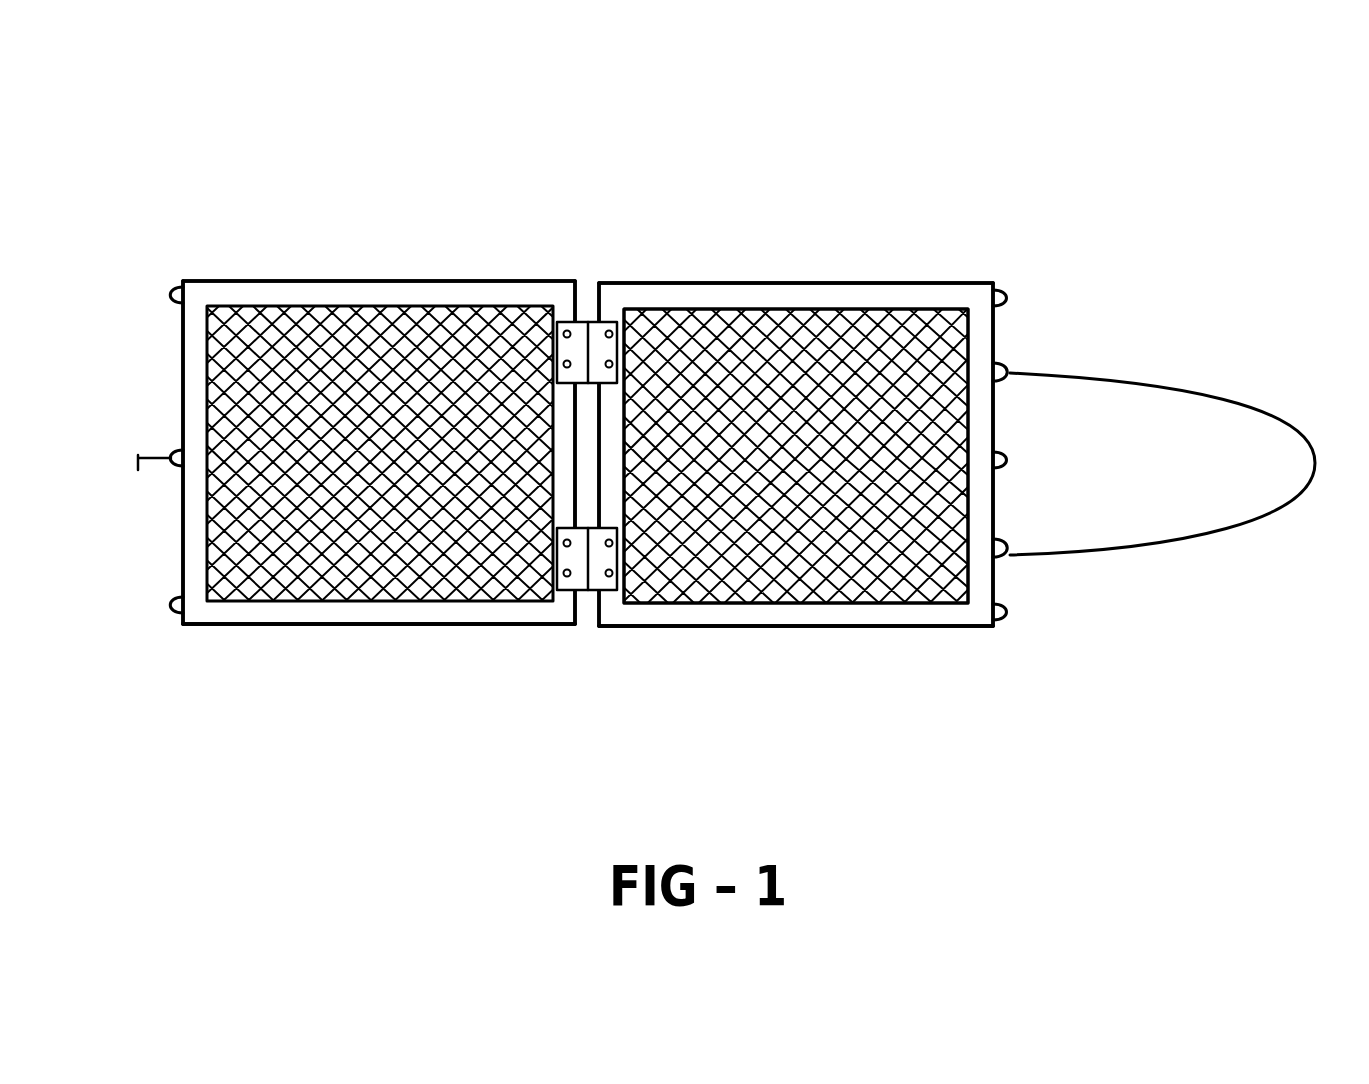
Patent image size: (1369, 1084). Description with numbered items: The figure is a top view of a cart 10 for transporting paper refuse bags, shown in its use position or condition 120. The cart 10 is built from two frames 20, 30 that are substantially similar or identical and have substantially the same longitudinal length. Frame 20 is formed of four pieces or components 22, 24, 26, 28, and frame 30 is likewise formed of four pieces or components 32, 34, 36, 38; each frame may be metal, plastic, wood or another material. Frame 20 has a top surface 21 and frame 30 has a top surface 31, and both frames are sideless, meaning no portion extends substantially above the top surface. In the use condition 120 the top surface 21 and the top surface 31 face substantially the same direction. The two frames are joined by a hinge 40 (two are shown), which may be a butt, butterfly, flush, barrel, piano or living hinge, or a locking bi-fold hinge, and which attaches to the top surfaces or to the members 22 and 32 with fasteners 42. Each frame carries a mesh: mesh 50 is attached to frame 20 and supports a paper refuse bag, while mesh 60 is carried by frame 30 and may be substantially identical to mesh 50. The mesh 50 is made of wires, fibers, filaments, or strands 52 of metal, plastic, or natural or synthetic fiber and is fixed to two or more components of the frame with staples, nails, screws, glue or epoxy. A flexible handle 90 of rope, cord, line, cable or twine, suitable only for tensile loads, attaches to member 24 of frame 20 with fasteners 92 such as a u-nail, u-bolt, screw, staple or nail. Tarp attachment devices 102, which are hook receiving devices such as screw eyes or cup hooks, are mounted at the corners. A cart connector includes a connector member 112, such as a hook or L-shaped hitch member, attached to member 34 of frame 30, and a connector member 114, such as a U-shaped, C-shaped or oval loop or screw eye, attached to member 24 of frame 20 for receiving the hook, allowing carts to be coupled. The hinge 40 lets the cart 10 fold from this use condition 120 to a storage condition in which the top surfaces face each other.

The cart 10 is at (952, 155).
The frame 20 is at (958, 272).
The top surface 21 is at (693, 616).
The portion or member 22 is at (606, 600).
The portion or member 24 is at (986, 589).
The portion or member 26 is at (772, 300).
The portion or member 28 is at (790, 618).
The frame 30 is at (431, 270).
The top surface 31 is at (401, 614).
The portion or member 32 is at (562, 310).
The portion or member 34 is at (194, 338).
The portion or member 36 is at (312, 295).
The portion or member 38 is at (350, 612).
The hinge 40 is at (577, 560).
The fasteners 42 is at (610, 331).
The mesh 50 is at (727, 340).
The wires, fibers, filaments, or strands 52 is at (892, 582).
The mesh 60 is at (384, 370).
The handle 90 is at (1170, 386).
The fasteners 92 is at (1010, 372).
The tarp attachment device 102 is at (178, 293).
The connector member 112 is at (152, 455).
The connector member 114 is at (1010, 460).
The use position or condition 120 is at (1082, 767).